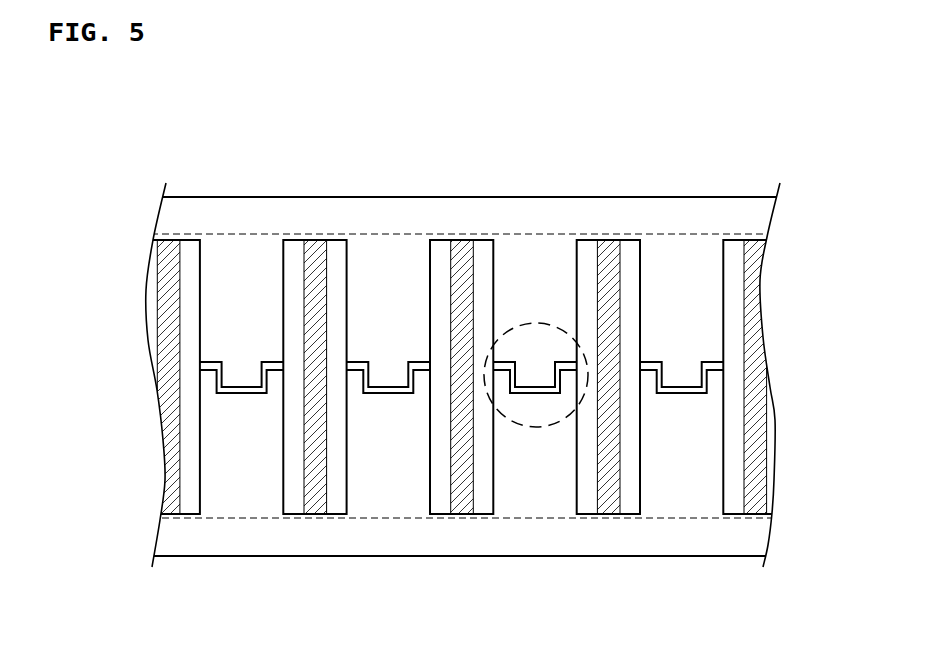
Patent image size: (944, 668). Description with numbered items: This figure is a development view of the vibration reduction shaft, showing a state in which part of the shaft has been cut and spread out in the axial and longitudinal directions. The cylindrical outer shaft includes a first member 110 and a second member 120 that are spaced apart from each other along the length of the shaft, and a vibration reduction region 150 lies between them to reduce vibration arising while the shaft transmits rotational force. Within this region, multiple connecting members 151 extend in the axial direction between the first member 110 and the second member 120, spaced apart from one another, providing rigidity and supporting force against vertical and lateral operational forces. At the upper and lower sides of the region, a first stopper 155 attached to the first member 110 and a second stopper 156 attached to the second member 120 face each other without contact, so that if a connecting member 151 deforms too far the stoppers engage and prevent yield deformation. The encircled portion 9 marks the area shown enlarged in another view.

The encircled portion 9 is at (530, 323).
The first member 110 is at (174, 215).
The second member 120 is at (172, 539).
The vibration reduction region 150 is at (174, 337).
The connecting member 151 is at (607, 487).
The first stopper 155 is at (710, 322).
The second stopper 156 is at (710, 450).